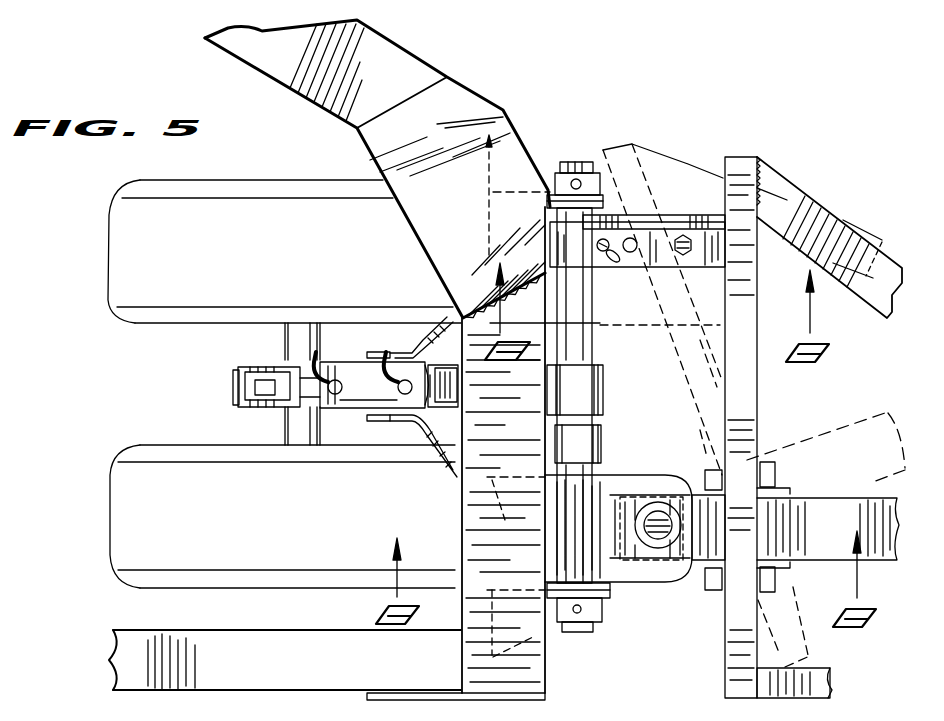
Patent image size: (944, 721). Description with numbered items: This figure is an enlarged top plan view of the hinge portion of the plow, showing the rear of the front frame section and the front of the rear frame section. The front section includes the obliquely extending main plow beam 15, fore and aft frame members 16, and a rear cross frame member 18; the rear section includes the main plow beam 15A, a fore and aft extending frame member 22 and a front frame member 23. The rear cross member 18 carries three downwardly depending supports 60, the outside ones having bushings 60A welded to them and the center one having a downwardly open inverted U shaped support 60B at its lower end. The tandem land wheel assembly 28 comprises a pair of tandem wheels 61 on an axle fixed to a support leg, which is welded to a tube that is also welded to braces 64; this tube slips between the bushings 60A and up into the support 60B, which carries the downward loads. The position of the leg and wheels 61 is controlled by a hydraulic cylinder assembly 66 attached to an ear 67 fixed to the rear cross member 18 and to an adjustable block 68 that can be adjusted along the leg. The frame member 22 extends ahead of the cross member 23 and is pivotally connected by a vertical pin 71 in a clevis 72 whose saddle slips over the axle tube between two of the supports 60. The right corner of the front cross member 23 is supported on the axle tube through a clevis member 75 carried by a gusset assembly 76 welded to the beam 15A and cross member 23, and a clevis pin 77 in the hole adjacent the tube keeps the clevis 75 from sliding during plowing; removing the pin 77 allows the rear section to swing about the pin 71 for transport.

The main plow beam 15 is at (383, 57).
The main plow beam 15A is at (802, 190).
The frame members 16 is at (133, 663).
The rear cross frame member 18 is at (530, 676).
The fore and aft extending frame member 22 is at (823, 513).
The front frame member 23 is at (748, 400).
The tandem land wheel assembly 28 is at (104, 540).
The downwardly depending supports 60 is at (553, 167).
The bushing 60A is at (584, 162).
The inverted U shaped support 60B is at (598, 443).
The tandem wheels 61 is at (160, 290).
The braces 64 is at (550, 200).
The hydraulic cylinder assembly 66 is at (363, 400).
The ear 67 is at (445, 332).
The adjustable block 68 is at (242, 358).
The vertical pin 71 is at (660, 522).
The clevis 72 is at (657, 570).
The clevis member 75 is at (631, 270).
The gusset assembly 76 is at (683, 217).
The clevis pin 77 is at (610, 236).